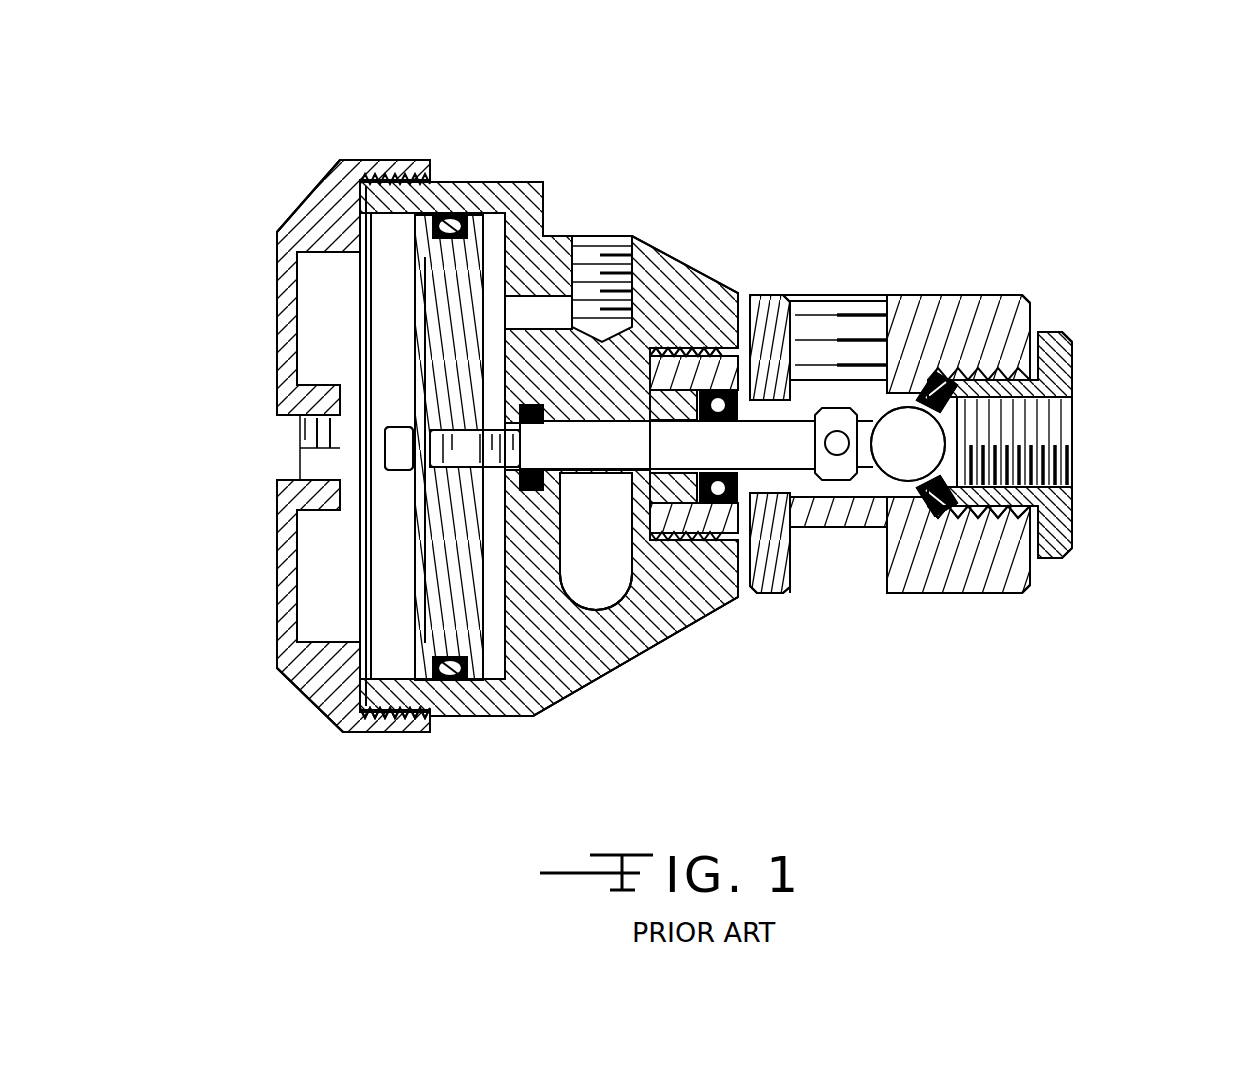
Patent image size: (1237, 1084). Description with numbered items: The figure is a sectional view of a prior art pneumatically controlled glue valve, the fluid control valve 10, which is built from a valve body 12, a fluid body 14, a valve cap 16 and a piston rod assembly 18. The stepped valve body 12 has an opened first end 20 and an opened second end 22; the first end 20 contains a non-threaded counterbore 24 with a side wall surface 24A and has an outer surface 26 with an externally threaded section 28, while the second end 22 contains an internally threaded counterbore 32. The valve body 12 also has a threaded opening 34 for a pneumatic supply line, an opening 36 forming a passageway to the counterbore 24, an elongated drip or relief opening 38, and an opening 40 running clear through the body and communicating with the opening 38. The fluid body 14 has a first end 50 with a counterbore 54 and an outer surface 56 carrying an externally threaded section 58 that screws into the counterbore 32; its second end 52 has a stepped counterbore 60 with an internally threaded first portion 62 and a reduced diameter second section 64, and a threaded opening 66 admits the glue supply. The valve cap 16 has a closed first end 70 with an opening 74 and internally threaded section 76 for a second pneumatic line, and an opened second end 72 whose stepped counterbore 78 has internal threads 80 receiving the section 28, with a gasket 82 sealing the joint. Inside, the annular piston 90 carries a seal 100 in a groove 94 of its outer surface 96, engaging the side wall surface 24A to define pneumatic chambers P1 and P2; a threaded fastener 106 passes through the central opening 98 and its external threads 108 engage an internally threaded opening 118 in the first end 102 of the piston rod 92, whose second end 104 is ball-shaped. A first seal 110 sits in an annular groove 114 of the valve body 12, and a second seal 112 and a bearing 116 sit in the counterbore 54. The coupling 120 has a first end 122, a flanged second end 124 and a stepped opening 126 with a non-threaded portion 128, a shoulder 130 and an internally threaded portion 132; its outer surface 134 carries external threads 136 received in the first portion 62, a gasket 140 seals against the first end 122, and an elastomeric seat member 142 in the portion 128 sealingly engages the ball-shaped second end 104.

The fluid control valve 10 is at (1000, 158).
The valve body 12 is at (684, 252).
The fluid body 14 is at (992, 278).
The valve cap 16 is at (268, 672).
The piston rod assembly 18 is at (596, 541).
The first end 20 is at (355, 592).
The second end 22 is at (800, 530).
The counterbore 24 is at (389, 446).
The side wall surface 24A is at (543, 182).
The outer surface 26 is at (478, 182).
The externally threaded section 28 is at (428, 160).
The internally threaded counterbore 32 is at (684, 592).
The threaded opening 34 is at (605, 236).
The opening 36 is at (538, 314).
The elongated opening 38 is at (612, 600).
The opening 40 is at (565, 425).
The first end 50 is at (648, 358).
The second end 52 is at (1040, 313).
The counterbore 54 is at (668, 600).
The outer surface 56 is at (752, 594).
The externally threaded section 58 is at (722, 552).
The stepped counterbore 60 is at (1042, 418).
The internally threaded first portion 62 is at (1060, 484).
The second section 64 is at (884, 316).
The opening 66 is at (793, 296).
The first end 70 is at (278, 335).
The second end 72 is at (453, 182).
The opening 74 is at (290, 440).
The internally threaded section 76 is at (295, 462).
The stepped counterbore 78 is at (380, 712).
The internal threads 80 is at (458, 712).
The gasket 82 is at (340, 730).
The piston 90 is at (500, 690).
The piston rod 92 is at (830, 582).
The groove 94 is at (475, 692).
The outer surface 96 is at (518, 705).
The central opening 98 is at (445, 410).
The seal 100 is at (470, 215).
The first end 102 is at (404, 450).
The second end 104 is at (1020, 440).
The threaded fastener 106 is at (400, 472).
The external threads 108 is at (520, 458).
The first seal 110 is at (590, 606).
The second seal 112 is at (714, 390).
The annular groove 114 is at (545, 410).
The bearing 116 is at (660, 372).
The internally threaded opening 118 is at (440, 606).
The coupling 120 is at (1084, 366).
The first end 122 is at (935, 596).
The flanged second end 124 is at (1075, 527).
The stepped opening 126 is at (1072, 405).
The non-threaded portion 128 is at (932, 408).
The shoulder 130 is at (932, 450).
The internally threaded portion 132 is at (1072, 487).
The outer surface 134 is at (1012, 596).
The external threads 136 is at (1030, 590).
The gasket 140 is at (840, 560).
The seat member 142 is at (960, 596).
The pneumatic chamber P1 is at (390, 538).
The pneumatic chamber P2 is at (545, 690).